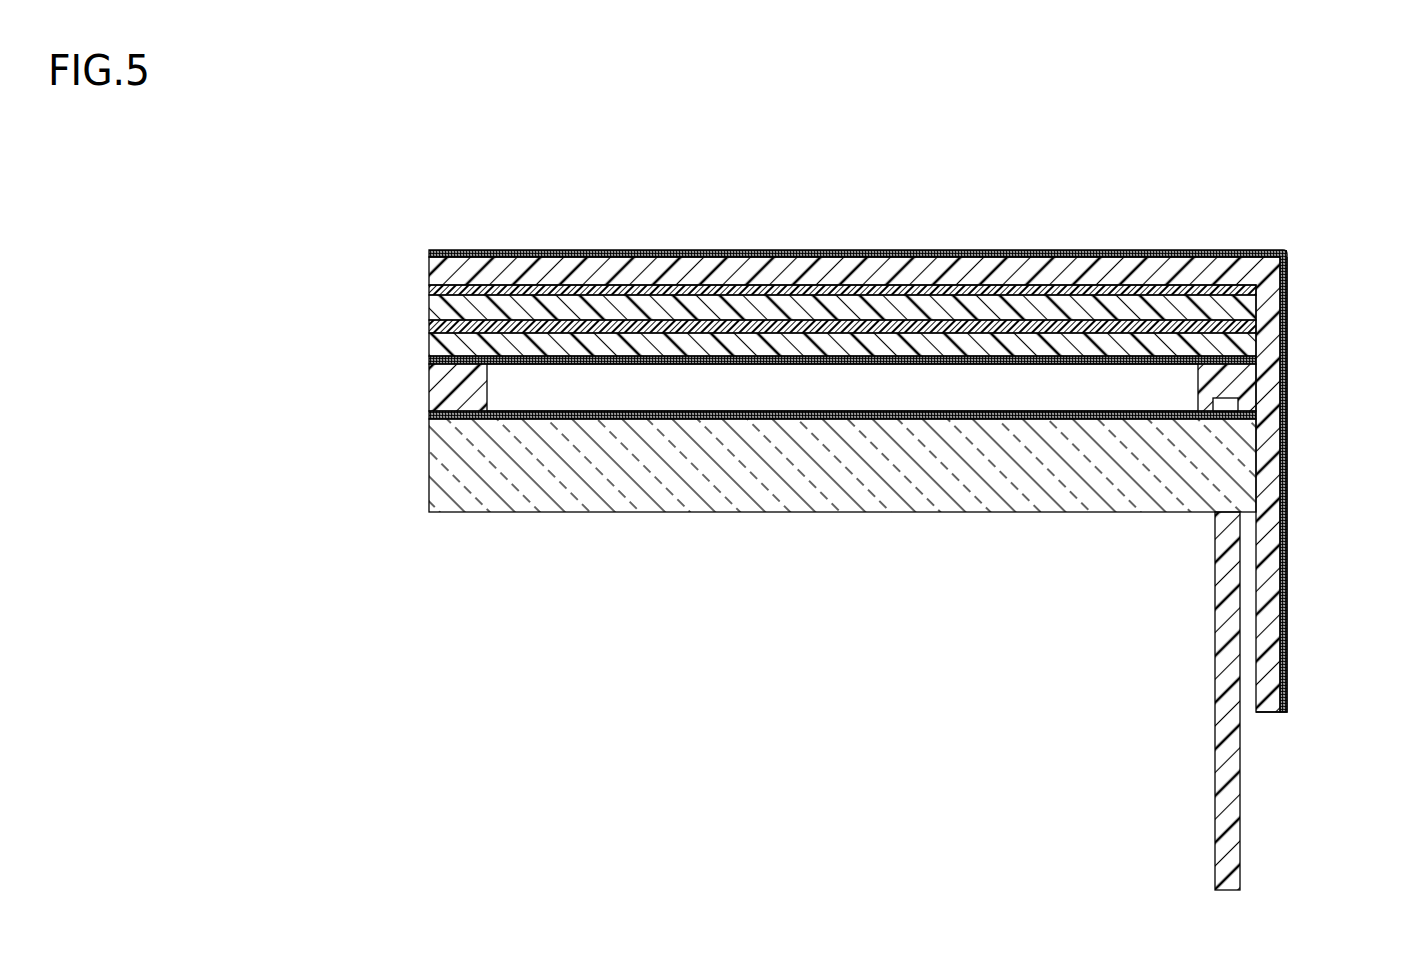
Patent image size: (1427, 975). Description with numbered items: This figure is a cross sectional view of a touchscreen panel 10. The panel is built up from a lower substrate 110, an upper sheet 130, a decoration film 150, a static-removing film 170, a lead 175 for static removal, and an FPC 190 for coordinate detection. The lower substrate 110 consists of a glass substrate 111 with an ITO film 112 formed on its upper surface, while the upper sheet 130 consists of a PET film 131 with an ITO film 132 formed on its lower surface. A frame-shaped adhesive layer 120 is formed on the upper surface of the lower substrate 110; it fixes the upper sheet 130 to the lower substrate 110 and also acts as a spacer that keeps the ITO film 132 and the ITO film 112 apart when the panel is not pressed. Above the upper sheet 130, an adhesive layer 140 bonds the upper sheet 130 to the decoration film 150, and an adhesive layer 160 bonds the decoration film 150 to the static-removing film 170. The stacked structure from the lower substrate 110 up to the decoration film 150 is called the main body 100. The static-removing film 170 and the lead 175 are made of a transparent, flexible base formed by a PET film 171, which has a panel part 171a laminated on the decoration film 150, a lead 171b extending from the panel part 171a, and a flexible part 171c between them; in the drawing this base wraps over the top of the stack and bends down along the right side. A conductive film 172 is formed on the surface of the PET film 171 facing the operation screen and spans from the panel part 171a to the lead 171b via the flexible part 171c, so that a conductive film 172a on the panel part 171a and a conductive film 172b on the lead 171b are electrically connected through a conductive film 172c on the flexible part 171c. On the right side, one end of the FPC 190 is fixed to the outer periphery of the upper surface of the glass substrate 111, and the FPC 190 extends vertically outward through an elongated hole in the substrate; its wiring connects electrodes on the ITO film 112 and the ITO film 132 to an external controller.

The touchscreen panel 10 is at (835, 118).
The main body 100 is at (238, 253).
The lower substrate 110 is at (305, 457).
The glass substrate 111 is at (447, 480).
The ITO film 112 is at (438, 417).
The adhesive layer 120 is at (438, 388).
The upper sheet 130 is at (305, 335).
The PET film 131 is at (438, 347).
The ITO film 132 is at (438, 363).
The adhesive layer 140 is at (438, 327).
The decoration film 150 is at (438, 308).
The adhesive layer 160 is at (438, 290).
The static-removing film 170 is at (670, 235).
The PET film 171 is at (873, 180).
The panel part 171a is at (908, 268).
The lead 171b is at (1267, 345).
The flexible part 171c is at (1277, 258).
The conductive film 172 is at (1367, 180).
The conductive film 172a is at (1210, 250).
The conductive film 172b is at (1288, 327).
The conductive film 172c is at (1287, 251).
The lead for static removal 175 is at (1310, 468).
The FPC for coordinate detection 190 is at (1225, 784).